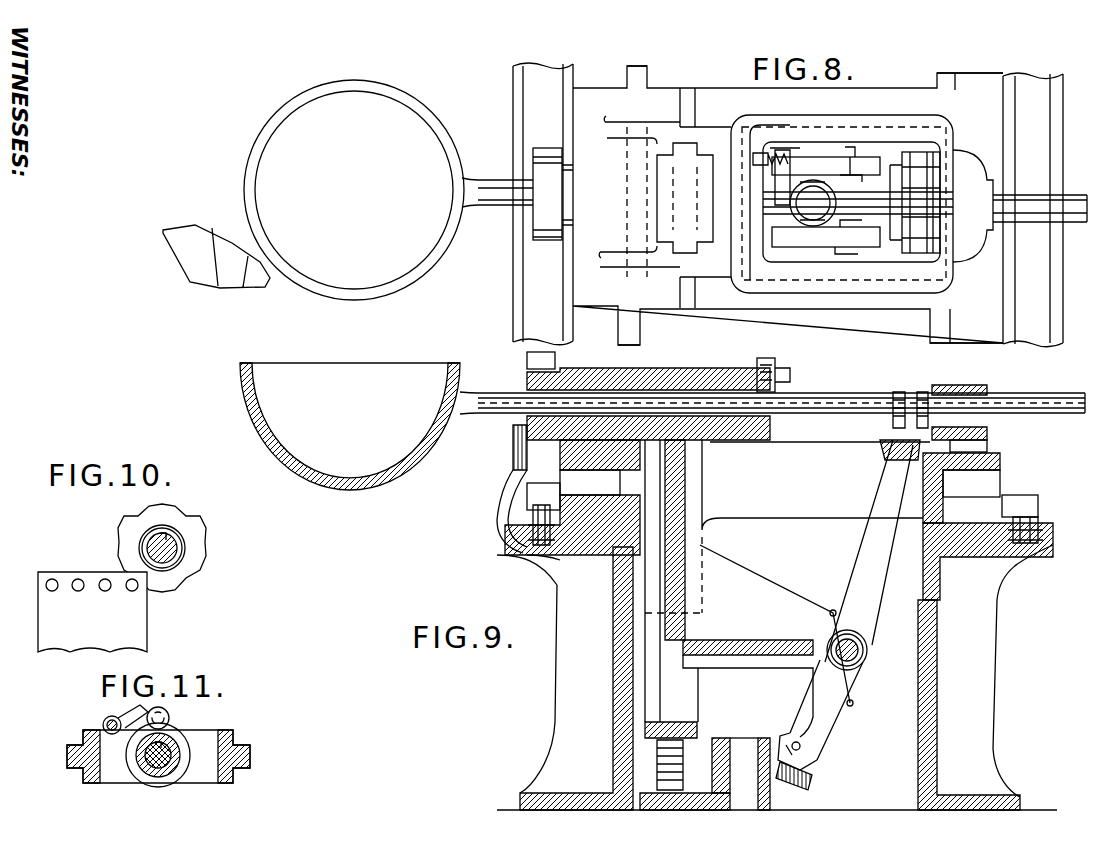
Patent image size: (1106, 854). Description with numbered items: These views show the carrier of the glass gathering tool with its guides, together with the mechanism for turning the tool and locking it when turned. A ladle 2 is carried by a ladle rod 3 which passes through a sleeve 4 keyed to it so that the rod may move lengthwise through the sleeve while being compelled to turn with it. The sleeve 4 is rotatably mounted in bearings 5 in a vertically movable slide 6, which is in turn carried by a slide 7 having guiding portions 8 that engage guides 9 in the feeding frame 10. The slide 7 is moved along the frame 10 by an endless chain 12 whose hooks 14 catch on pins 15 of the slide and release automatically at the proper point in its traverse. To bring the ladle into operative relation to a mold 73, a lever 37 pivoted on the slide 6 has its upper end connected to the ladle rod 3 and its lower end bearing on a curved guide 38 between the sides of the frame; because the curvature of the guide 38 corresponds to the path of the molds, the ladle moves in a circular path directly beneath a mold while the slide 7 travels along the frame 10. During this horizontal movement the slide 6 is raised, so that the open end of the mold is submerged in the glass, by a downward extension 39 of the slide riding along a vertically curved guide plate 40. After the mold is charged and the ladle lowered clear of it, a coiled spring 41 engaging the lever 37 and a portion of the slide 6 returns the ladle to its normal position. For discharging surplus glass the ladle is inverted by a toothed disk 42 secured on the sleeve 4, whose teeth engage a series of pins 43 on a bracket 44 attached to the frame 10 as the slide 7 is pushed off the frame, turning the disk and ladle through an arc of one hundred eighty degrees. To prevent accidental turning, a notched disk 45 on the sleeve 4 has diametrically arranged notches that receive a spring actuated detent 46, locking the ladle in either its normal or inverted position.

In FIG. 8, the ladle 2 is at (426, 108).
In FIG. 9, the ladle 2 is at (360, 485).
In FIG. 8, the ladle rod 3 is at (489, 208).
In FIG. 9, the ladle rod 3 is at (1045, 416).
In FIG. 10, the ladle rod 3 is at (178, 549).
In FIG. 11, the ladle rod 3 is at (140, 770).
In FIG. 9, the sleeve 4 is at (640, 385).
In FIG. 10, the sleeve 4 is at (186, 563).
In FIG. 11, the sleeve 4 is at (175, 772).
In FIG. 8, the bearing 5 is at (661, 196).
In FIG. 8, the vertically movable slide 6 is at (683, 150).
In FIG. 9, the vertically movable slide 6 is at (688, 485).
In FIG. 11, the vertically movable slide 6 is at (233, 742).
In FIG. 8, the slide 7 is at (713, 300).
In FIG. 9, the slide 7 is at (1000, 463).
In FIG. 9, the guiding portion 8 is at (556, 562).
In FIG. 8, the guide 9 is at (793, 205).
In FIG. 9, the guide 9 is at (592, 552).
In FIG. 8, the feeding frame 10 is at (513, 328).
In FIG. 9, the feeding frame 10 is at (612, 694).
In FIG. 9, the endless chain 12 is at (520, 522).
In FIG. 9, the hook 14 is at (540, 483).
In FIG. 9, the pin 15 is at (780, 480).
In FIG. 8, the lever 37 is at (897, 240).
In FIG. 9, the lever 37 is at (855, 580).
In FIG. 9, the curved guide 38 is at (790, 745).
In FIG. 9, the downward extension 39 is at (685, 712).
In FIG. 9, the guide plate 40 is at (705, 789).
In FIG. 8, the coiled spring 41 is at (867, 228).
In FIG. 9, the coiled spring 41 is at (866, 660).
In FIG. 8, the toothed disk 42 is at (548, 206).
In FIG. 9, the toothed disk 42 is at (527, 361).
In FIG. 10, the toothed disk 42 is at (176, 512).
In FIG. 9, the pin 43 is at (515, 440).
In FIG. 10, the pin 43 is at (103, 580).
In FIG. 9, the bracket 44 is at (508, 488).
In FIG. 9, the notched disk 45 is at (790, 390).
In FIG. 11, the notched disk 45 is at (148, 785).
In FIG. 8, the spring actuated detent 46 is at (782, 140).
In FIG. 9, the spring actuated detent 46 is at (768, 358).
In FIG. 11, the spring actuated detent 46 is at (108, 720).
In FIG. 8, the mold 73 is at (178, 269).